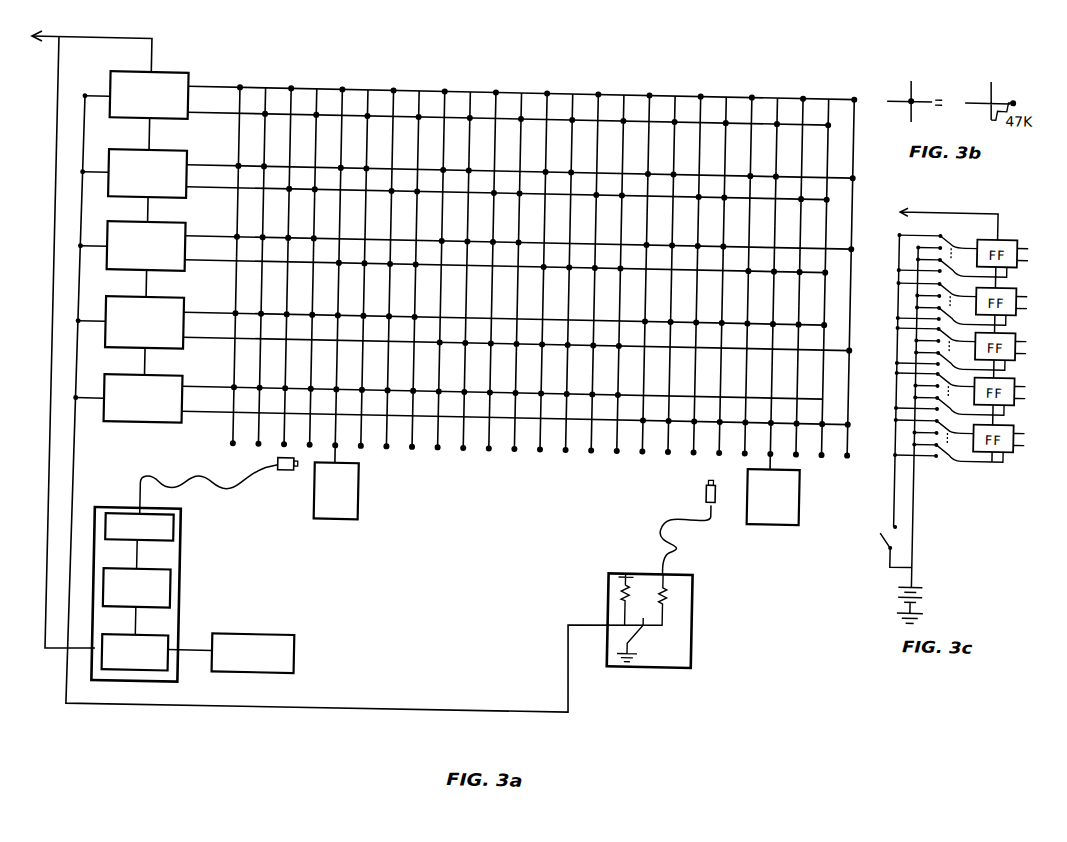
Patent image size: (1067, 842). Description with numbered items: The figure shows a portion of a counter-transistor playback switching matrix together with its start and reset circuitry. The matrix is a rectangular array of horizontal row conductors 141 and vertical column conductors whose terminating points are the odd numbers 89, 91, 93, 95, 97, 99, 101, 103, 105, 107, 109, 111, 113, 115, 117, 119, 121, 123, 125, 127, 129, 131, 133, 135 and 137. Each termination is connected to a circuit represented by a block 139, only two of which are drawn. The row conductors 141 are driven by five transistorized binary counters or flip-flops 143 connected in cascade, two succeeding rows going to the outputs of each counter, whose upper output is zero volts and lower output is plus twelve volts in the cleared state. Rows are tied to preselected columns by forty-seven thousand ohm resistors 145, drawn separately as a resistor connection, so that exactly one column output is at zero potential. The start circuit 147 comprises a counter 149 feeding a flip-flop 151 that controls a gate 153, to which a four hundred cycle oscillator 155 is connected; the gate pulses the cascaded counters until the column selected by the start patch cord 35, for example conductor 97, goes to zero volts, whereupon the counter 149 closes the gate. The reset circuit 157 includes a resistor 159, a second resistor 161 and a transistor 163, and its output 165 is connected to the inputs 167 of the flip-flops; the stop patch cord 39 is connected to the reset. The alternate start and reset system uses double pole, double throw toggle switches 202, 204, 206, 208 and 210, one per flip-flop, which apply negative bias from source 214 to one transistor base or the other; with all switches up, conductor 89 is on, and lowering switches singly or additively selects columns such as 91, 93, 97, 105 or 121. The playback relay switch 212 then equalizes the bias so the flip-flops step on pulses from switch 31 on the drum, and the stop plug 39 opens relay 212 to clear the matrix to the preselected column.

In FIG. 3a, the switch 31 is at (121, 35).
In FIG. 3c, the switch 31 is at (959, 216).
In FIG. 3a, the start patch cord 35 is at (294, 460).
In FIG. 3a, the stop patch cord 39 is at (716, 478).
In FIG. 3a, the column conductor termination 89 is at (247, 266).
In FIG. 3a, the column conductor termination 91 is at (272, 267).
In FIG. 3a, the column conductor termination 93 is at (298, 267).
In FIG. 3a, the column conductor termination 95 is at (324, 268).
In FIG. 3a, the column conductor termination 97 is at (349, 268).
In FIG. 3a, the column conductor termination 99 is at (375, 269).
In FIG. 3a, the column conductor termination 101 is at (401, 269).
In FIG. 3a, the column conductor termination 103 is at (427, 270).
In FIG. 3a, the column conductor termination 105 is at (453, 270).
In FIG. 3a, the column conductor termination 107 is at (478, 271).
In FIG. 3a, the column conductor termination 109 is at (504, 271).
In FIG. 3a, the column conductor termination 111 is at (528, 272).
In FIG. 3a, the column conductor termination 113 is at (555, 272).
In FIG. 3a, the column conductor termination 115 is at (581, 273).
In FIG. 3a, the column conductor termination 117 is at (606, 274).
In FIG. 3a, the column conductor termination 119 is at (632, 274).
In FIG. 3a, the column conductor termination 121 is at (657, 275).
In FIG. 3a, the column conductor termination 123 is at (683, 275).
In FIG. 3a, the column conductor termination 125 is at (709, 276).
In FIG. 3a, the column conductor termination 127 is at (734, 276).
In FIG. 3a, the column conductor termination 129 is at (760, 277).
In FIG. 3a, the column conductor termination 131 is at (784, 277).
In FIG. 3a, the column conductor termination 133 is at (811, 278).
In FIG. 3a, the column conductor termination 135 is at (836, 278).
In FIG. 3a, the column conductor termination 137 is at (863, 279).
In FIG. 3a, the block circuit 139 is at (557, 486).
In FIG. 3a, the horizontal row conductors 141 is at (232, 105).
In FIG. 3a, the flip-flops 143 is at (188, 120).
In FIG. 3c, the flip-flops 143 is at (1024, 250).
In FIG. 3a, the 47K ohm resistors 145 is at (449, 81).
In FIG. 3b, the 47K ohm resistors 145 is at (915, 77).
In FIG. 3a, the start circuit 147 is at (190, 579).
In FIG. 3a, the counter 149 is at (184, 519).
In FIG. 3a, the flip-flop 151 is at (182, 591).
In FIG. 3a, the gate 153 is at (176, 662).
In FIG. 3a, the 400 c.p.s. oscillator 155 is at (306, 634).
In FIG. 3a, the reset circuit 157 is at (674, 605).
In FIG. 3a, the resistor 159 is at (639, 582).
In FIG. 3a, the resistor 161 is at (676, 591).
In FIG. 3a, the transistor 163 is at (661, 611).
In FIG. 3a, the output of reset circuit 165 is at (602, 613).
In FIG. 3a, the inputs of flip-flops 167 is at (100, 95).
In FIG. 3c, the toggle switch 202 is at (978, 221).
In FIG. 3c, the toggle switch 204 is at (1005, 300).
In FIG. 3c, the toggle switch 206 is at (1005, 345).
In FIG. 3c, the toggle switch 208 is at (1005, 390).
In FIG. 3c, the toggle switch 210 is at (970, 438).
In FIG. 3c, the playback relay switch 212 is at (892, 521).
In FIG. 3c, the negative bias source 214 is at (930, 574).